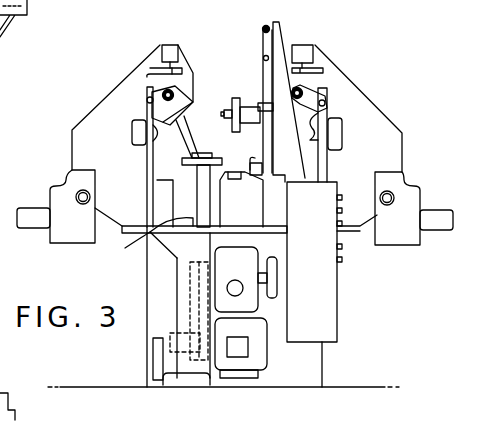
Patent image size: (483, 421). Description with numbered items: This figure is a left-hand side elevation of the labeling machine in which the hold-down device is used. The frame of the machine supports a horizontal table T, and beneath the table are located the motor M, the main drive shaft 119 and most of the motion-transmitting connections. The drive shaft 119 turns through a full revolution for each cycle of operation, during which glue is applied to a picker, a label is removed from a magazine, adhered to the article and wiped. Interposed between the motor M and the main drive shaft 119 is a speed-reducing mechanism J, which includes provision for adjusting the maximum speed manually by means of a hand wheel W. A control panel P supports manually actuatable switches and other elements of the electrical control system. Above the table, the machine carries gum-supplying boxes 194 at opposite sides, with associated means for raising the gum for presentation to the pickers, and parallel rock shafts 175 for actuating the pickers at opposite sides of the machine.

The rock shafts 175 is at (172, 94).
The gum-supplying boxes 194 is at (58, 200).
The table T is at (148, 235).
The speed-reducing mechanism J is at (233, 272).
The motor M is at (228, 326).
The hand wheel W is at (280, 268).
The main drive shaft 119 is at (240, 288).
The control panel P is at (322, 324).